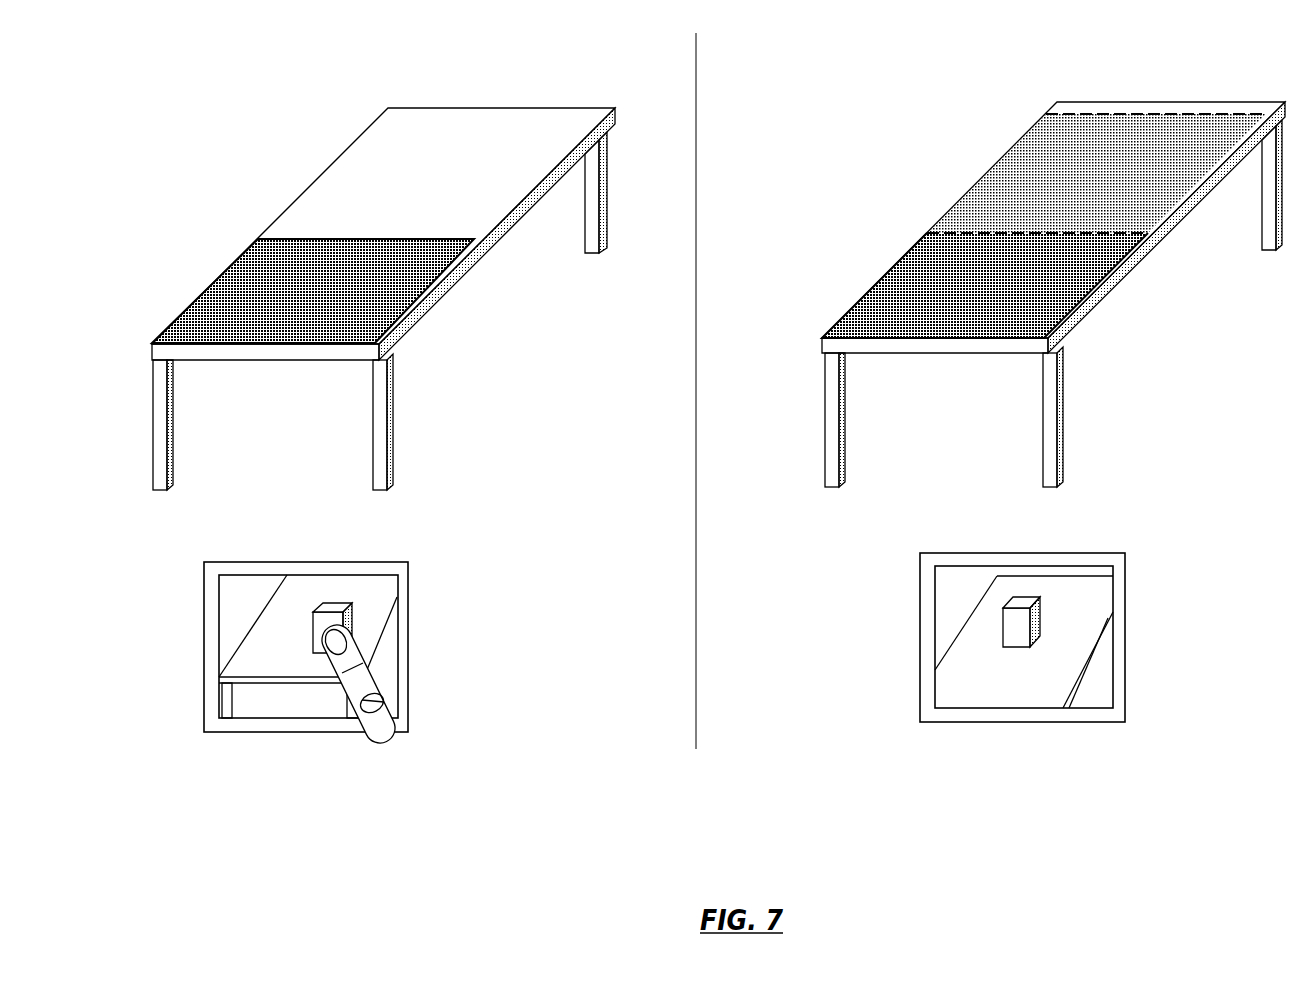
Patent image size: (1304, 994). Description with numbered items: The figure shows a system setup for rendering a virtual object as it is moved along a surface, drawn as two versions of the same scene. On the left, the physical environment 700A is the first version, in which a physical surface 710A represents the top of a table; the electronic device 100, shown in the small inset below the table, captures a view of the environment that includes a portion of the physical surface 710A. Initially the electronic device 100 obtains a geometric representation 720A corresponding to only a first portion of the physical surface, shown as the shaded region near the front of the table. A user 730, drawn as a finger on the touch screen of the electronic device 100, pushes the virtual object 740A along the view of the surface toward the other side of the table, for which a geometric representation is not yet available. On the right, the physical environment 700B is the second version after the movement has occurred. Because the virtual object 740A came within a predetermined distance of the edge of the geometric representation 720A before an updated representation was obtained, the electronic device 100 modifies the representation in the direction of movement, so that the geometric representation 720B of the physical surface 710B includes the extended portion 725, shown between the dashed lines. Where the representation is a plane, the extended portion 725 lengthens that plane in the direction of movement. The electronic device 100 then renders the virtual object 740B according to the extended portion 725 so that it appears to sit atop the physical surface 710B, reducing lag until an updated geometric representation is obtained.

The physical environment 700A is at (260, 80).
The physical environment 700B is at (902, 60).
The physical surface 710A is at (500, 108).
The physical surface 710B is at (1172, 102).
The geometric representation 720A is at (408, 300).
The geometric representation 720B is at (1122, 257).
The extended portion 725 is at (1168, 192).
The user 730 is at (385, 718).
The virtual object 740A is at (352, 622).
The virtual object 740B is at (1042, 616).
The electronic device 100 is at (345, 732).